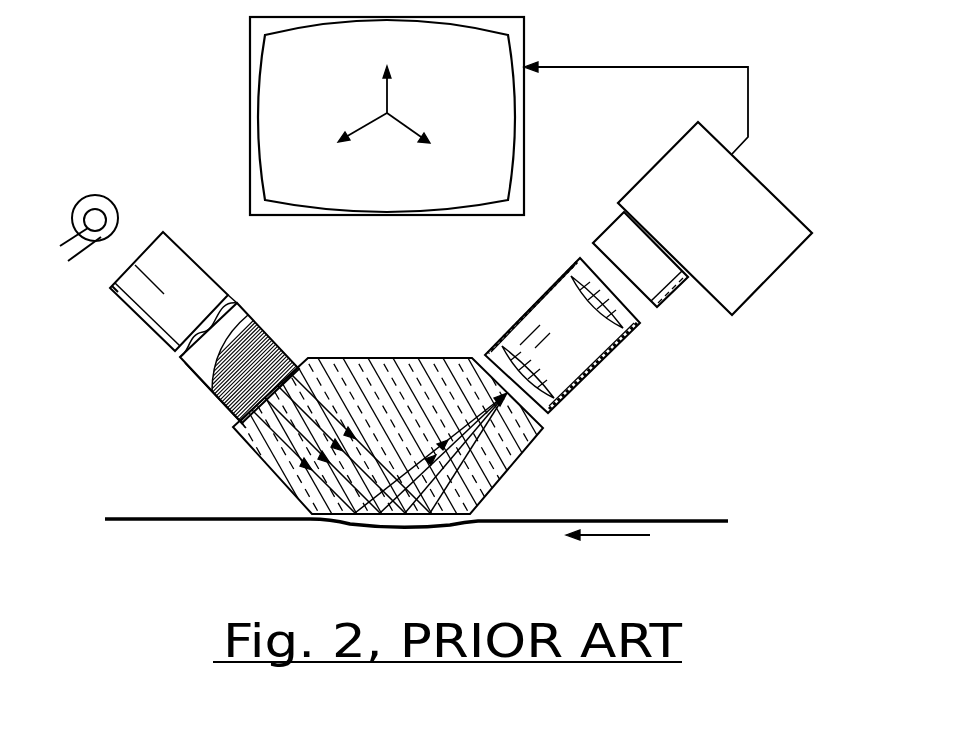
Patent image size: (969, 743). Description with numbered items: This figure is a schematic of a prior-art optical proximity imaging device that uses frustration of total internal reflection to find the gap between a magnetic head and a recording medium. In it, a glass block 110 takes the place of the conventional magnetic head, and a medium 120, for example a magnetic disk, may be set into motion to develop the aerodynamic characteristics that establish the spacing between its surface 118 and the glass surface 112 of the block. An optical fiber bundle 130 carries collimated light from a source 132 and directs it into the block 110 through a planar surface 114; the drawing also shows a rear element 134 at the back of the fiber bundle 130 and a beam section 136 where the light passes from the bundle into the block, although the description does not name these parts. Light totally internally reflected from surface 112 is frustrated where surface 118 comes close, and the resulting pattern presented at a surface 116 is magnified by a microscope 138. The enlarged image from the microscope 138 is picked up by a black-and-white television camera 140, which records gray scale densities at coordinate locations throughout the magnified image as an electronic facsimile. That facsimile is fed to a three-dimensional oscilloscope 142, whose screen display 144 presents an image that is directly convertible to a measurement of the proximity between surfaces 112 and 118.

The glass block 110 is at (393, 358).
The glass surface 112 is at (480, 510).
The planar surface 114 is at (240, 425).
The surface 116 is at (540, 423).
The surface 118 is at (695, 522).
The medium 120 is at (532, 522).
The optical fiber bundle 130 is at (193, 275).
The source 132 is at (85, 196).
The laser rear element 134 is at (114, 286).
The beam expander 136 is at (304, 362).
The microscope 138 is at (586, 378).
The black-and-white television camera 140 is at (708, 296).
The three-dimensional oscilloscope 142 is at (525, 36).
The oscilloscope display 144 is at (482, 65).